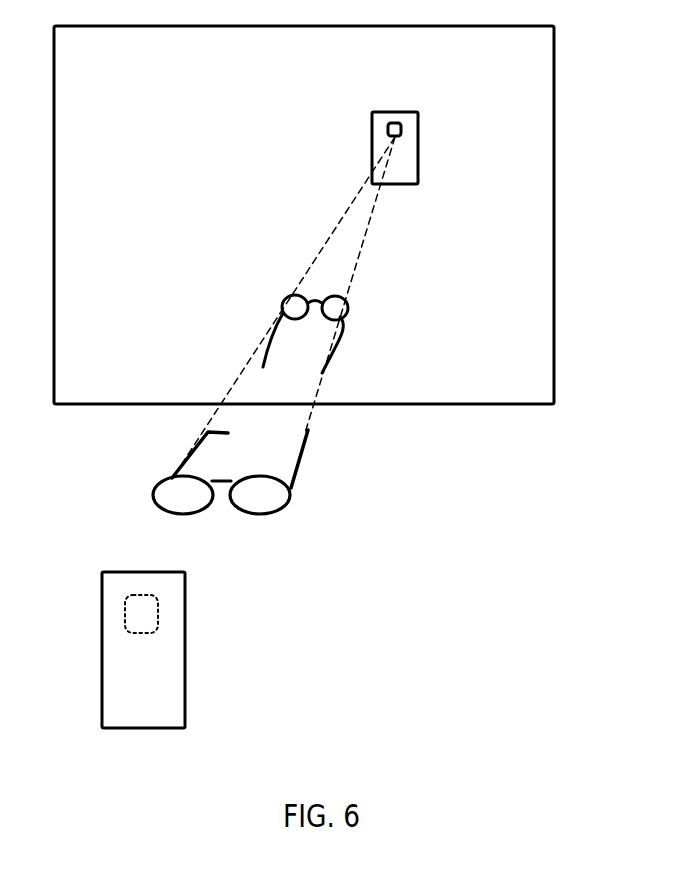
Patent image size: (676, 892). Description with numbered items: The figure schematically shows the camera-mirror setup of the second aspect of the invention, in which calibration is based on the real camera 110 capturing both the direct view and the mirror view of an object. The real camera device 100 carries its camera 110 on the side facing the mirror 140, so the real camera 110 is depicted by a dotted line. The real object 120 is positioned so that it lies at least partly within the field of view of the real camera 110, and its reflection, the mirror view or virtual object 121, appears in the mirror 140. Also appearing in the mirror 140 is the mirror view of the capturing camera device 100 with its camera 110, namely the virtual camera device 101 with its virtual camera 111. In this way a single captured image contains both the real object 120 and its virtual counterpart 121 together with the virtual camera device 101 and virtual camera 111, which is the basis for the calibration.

The camera device 100 is at (214, 704).
The camera 110 is at (207, 612).
The real object 120 is at (312, 517).
The mirror view of the real object 121 is at (370, 341).
The virtual camera device 101 is at (441, 175).
The virtual camera 111 is at (440, 132).
The mirror 140 is at (582, 341).